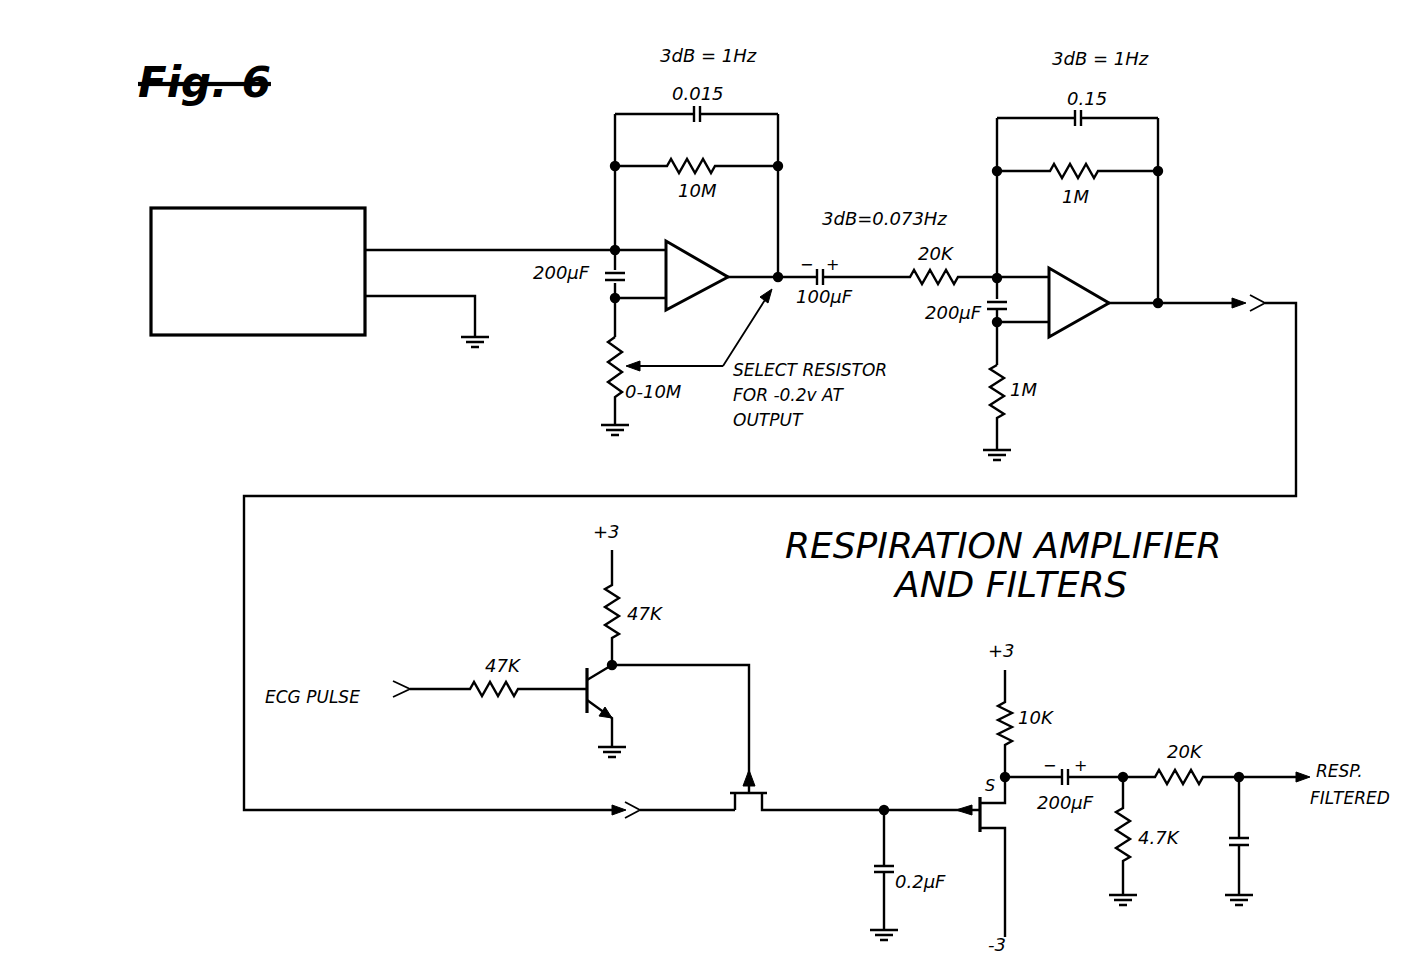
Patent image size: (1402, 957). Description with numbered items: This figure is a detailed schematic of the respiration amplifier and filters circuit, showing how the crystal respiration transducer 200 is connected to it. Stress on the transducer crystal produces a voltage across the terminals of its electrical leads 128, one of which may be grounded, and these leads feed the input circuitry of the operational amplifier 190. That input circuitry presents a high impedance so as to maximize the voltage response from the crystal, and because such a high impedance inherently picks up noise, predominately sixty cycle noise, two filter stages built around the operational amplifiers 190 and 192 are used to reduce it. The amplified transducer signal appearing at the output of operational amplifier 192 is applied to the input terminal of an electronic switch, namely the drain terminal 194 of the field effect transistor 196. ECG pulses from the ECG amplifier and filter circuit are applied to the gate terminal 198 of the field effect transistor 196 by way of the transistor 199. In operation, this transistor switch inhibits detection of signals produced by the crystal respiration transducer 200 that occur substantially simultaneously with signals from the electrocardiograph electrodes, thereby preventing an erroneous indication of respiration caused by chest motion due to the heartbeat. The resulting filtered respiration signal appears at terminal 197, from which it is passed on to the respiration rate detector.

The crystal respiration transducer 200 is at (240, 208).
The electrical leads 128 is at (420, 250).
The operational amplifier 190 is at (690, 255).
The operational amplifier 192 is at (1068, 280).
The transistor 199 is at (583, 697).
The gate terminal 198 is at (746, 773).
The field effect transistor 196 is at (744, 800).
The drain terminal 194 is at (668, 813).
The terminal 197 is at (1243, 774).